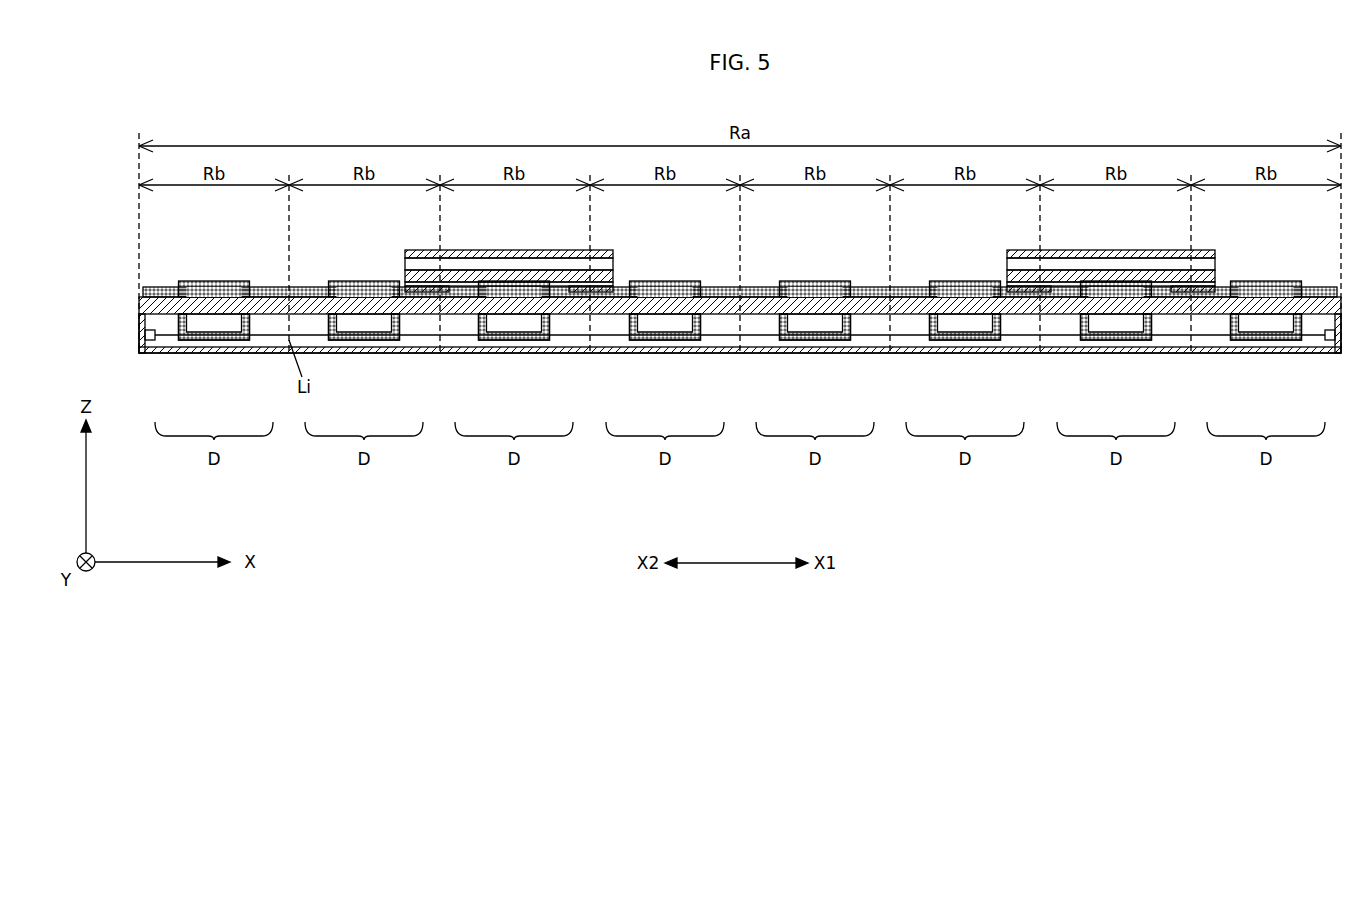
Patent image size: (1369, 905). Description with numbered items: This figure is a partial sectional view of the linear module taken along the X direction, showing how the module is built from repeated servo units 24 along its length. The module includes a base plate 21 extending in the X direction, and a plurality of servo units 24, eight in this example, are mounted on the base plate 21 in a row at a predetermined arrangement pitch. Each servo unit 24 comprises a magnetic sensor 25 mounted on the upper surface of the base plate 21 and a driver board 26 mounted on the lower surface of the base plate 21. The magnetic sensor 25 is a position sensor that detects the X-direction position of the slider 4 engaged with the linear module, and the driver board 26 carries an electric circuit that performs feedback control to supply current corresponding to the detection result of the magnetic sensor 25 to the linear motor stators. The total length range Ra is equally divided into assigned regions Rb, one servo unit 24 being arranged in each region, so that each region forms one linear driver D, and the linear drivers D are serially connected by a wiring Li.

The slider 4 is at (810, 248).
The base plate 21 is at (143, 303).
The servo unit 24 is at (740, 384).
The magnetic sensor 25 is at (740, 250).
The driver board 26 is at (740, 355).